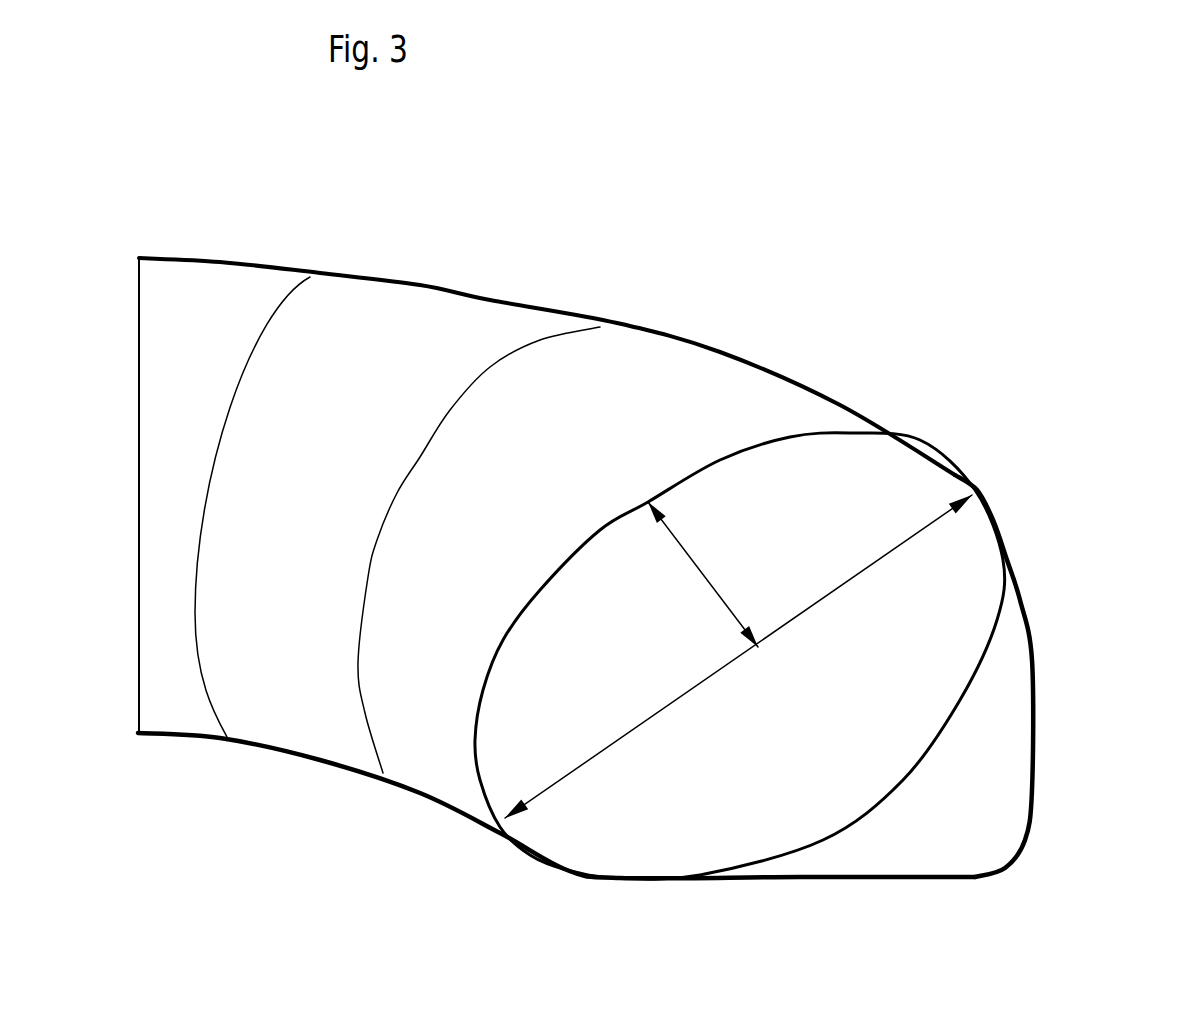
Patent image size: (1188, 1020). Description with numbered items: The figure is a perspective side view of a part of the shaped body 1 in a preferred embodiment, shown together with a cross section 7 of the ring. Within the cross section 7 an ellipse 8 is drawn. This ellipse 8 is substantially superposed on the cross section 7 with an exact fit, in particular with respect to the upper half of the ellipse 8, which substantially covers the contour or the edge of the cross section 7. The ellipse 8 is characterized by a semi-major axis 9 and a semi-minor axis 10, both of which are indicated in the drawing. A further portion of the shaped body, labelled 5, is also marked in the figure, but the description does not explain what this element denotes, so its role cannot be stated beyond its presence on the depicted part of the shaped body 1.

The shaped body 1 is at (572, 262).
The blade root region 5 is at (334, 425).
The cross section 7 is at (1066, 624).
The ellipse 8 is at (531, 882).
The semi-major axis 9 is at (712, 730).
The semi-minor axis 10 is at (692, 628).